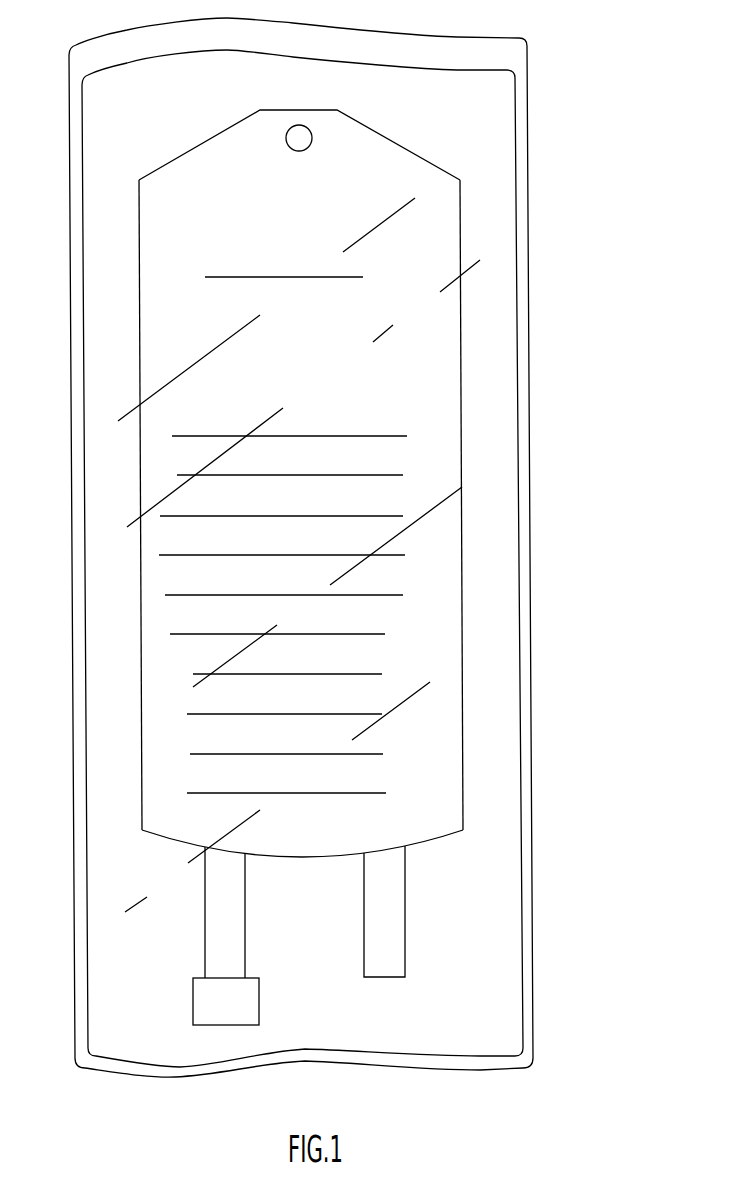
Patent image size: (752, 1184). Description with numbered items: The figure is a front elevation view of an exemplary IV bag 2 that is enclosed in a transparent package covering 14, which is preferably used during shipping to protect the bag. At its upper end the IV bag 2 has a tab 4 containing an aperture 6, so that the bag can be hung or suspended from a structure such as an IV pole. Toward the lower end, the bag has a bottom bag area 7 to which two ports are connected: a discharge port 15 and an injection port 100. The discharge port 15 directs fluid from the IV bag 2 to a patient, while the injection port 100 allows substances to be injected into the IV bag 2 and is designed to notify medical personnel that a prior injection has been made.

The injection port 100 is at (193, 927).
The transparent package covering 14 is at (528, 210).
The IV bag 2 is at (476, 313).
The tab 4 is at (375, 153).
The aperture 6 is at (297, 137).
The bottom bag area 7 is at (435, 841).
The discharge port 15 is at (363, 895).